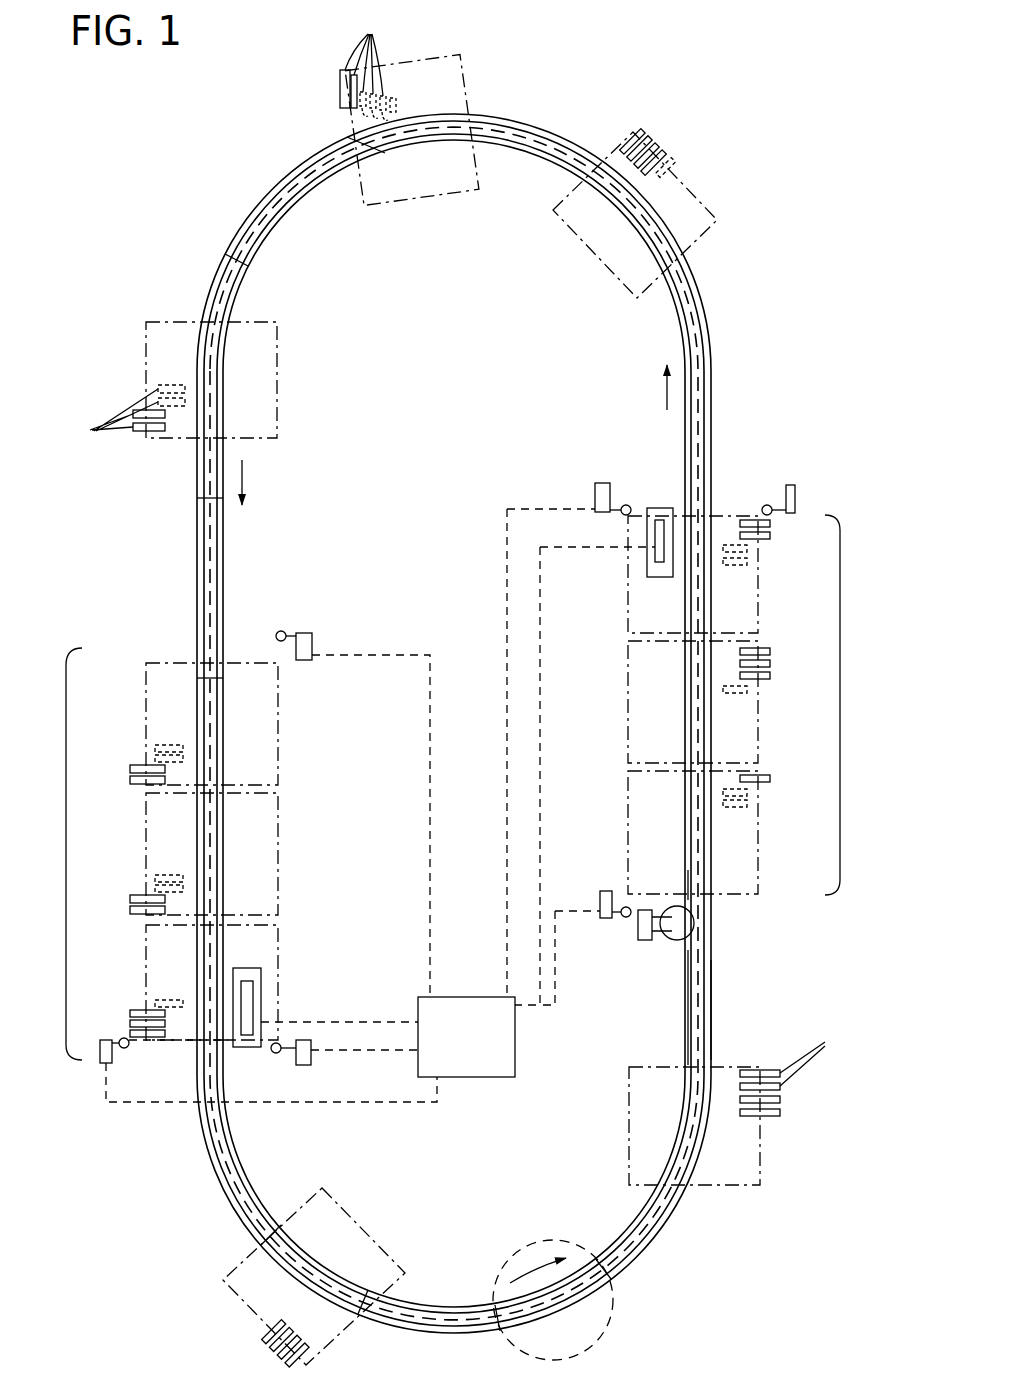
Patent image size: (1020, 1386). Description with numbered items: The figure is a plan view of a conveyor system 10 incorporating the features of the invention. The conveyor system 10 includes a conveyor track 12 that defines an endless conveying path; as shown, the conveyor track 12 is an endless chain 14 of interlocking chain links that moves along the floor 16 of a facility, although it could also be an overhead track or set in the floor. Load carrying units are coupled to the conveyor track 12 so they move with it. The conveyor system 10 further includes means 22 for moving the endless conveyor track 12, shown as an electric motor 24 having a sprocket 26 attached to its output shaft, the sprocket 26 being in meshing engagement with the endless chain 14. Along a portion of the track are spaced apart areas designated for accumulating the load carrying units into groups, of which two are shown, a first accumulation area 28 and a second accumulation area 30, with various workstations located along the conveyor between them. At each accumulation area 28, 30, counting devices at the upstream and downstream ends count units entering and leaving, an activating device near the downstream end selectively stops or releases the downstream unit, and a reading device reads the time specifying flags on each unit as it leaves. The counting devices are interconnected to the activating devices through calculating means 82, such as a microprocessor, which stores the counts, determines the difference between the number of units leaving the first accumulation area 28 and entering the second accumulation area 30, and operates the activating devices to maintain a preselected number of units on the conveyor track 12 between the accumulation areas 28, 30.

The conveyor system 10 is at (195, 410).
The conveyor track 12 is at (703, 330).
The endless chain 14 is at (696, 1010).
The floor 16 is at (778, 382).
The means for moving the endless conveyor track 22 is at (665, 946).
The electric motor 24 is at (643, 942).
The sprocket 26 is at (694, 918).
The first accumulation area 28 is at (843, 700).
The second accumulation area 30 is at (64, 885).
The calculating means 82 is at (465, 1063).